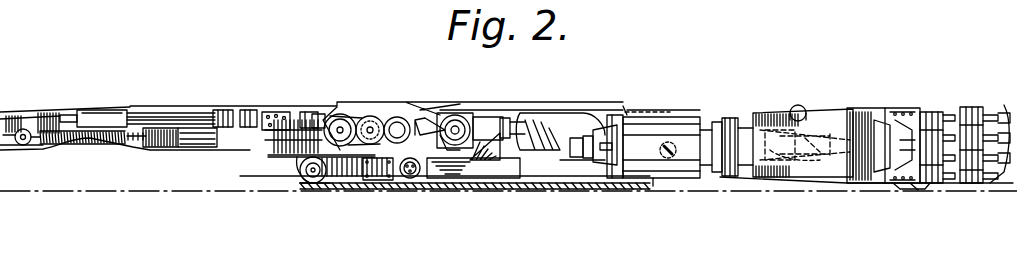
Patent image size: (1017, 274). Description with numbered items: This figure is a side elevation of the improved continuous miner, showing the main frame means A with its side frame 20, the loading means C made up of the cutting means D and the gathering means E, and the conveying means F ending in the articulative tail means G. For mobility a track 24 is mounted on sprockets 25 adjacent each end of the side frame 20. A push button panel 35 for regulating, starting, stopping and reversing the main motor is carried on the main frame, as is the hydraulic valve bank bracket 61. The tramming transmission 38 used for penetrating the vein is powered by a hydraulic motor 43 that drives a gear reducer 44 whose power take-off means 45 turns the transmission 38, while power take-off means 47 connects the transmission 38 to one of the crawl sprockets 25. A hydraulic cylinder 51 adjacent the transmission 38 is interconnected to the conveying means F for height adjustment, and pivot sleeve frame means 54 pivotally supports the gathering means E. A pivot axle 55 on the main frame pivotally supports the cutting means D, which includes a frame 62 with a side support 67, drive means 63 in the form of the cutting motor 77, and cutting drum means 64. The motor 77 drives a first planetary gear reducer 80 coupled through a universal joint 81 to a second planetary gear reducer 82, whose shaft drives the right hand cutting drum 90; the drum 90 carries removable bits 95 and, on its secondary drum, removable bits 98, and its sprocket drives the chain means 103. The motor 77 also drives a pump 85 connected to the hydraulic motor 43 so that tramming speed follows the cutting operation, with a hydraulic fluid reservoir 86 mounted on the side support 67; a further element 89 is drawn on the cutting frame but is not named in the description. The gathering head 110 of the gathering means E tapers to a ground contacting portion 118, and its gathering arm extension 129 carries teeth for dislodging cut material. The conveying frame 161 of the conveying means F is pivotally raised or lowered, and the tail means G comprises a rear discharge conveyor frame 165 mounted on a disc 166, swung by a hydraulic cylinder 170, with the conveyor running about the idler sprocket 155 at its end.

The side frame 20 is at (350, 176).
The track 24 is at (592, 178).
The sprocket 25 is at (318, 184).
The push button panel 35 is at (300, 92).
The tramming transmission 38 is at (365, 112).
The hydraulic motor 43 is at (500, 116).
The gear reducer 44 is at (465, 112).
The power take-off means 45 is at (428, 118).
The power take-off means 47 is at (300, 185).
The hydraulic cylinder 51 is at (318, 112).
The pivot sleeve frame means 54 is at (664, 144).
The pivot axle 55 is at (411, 178).
The hydraulic valve bank bracket 61 is at (292, 155).
The frame 62 is at (777, 98).
The drive means 63 is at (664, 96).
The cutting drum means 64 is at (982, 90).
The side support 67 is at (562, 178).
The cutting motor 77 is at (656, 178).
The first planetary gear reducer 80 is at (718, 116).
The universal joint 81 is at (782, 168).
The second planetary gear reducer 82 is at (890, 108).
The pump 85 is at (583, 140).
The hydraulic fluid reservoir 86 is at (502, 178).
The knob 89 is at (802, 105).
The cutting drum 90 is at (968, 184).
The removable bit 95 is at (990, 108).
The removable bit 98 is at (996, 184).
The chain means 103 is at (938, 110).
The gathering head 110 is at (683, 110).
The ground contacting portion 118 is at (905, 189).
The gathering arm extension 129 is at (928, 192).
The idler sprocket 155 is at (24, 146).
The conveying frame 161 is at (258, 138).
The rear discharge conveyor frame 165 is at (110, 90).
The disc 166 is at (180, 149).
The hydraulic cylinder 170 is at (190, 92).
The main frame means A is at (275, 186).
The loading means C is at (882, 78).
The cutting means D is at (972, 86).
The gathering means E is at (828, 117).
The conveying means F is at (252, 92).
The tail means G is at (42, 88).